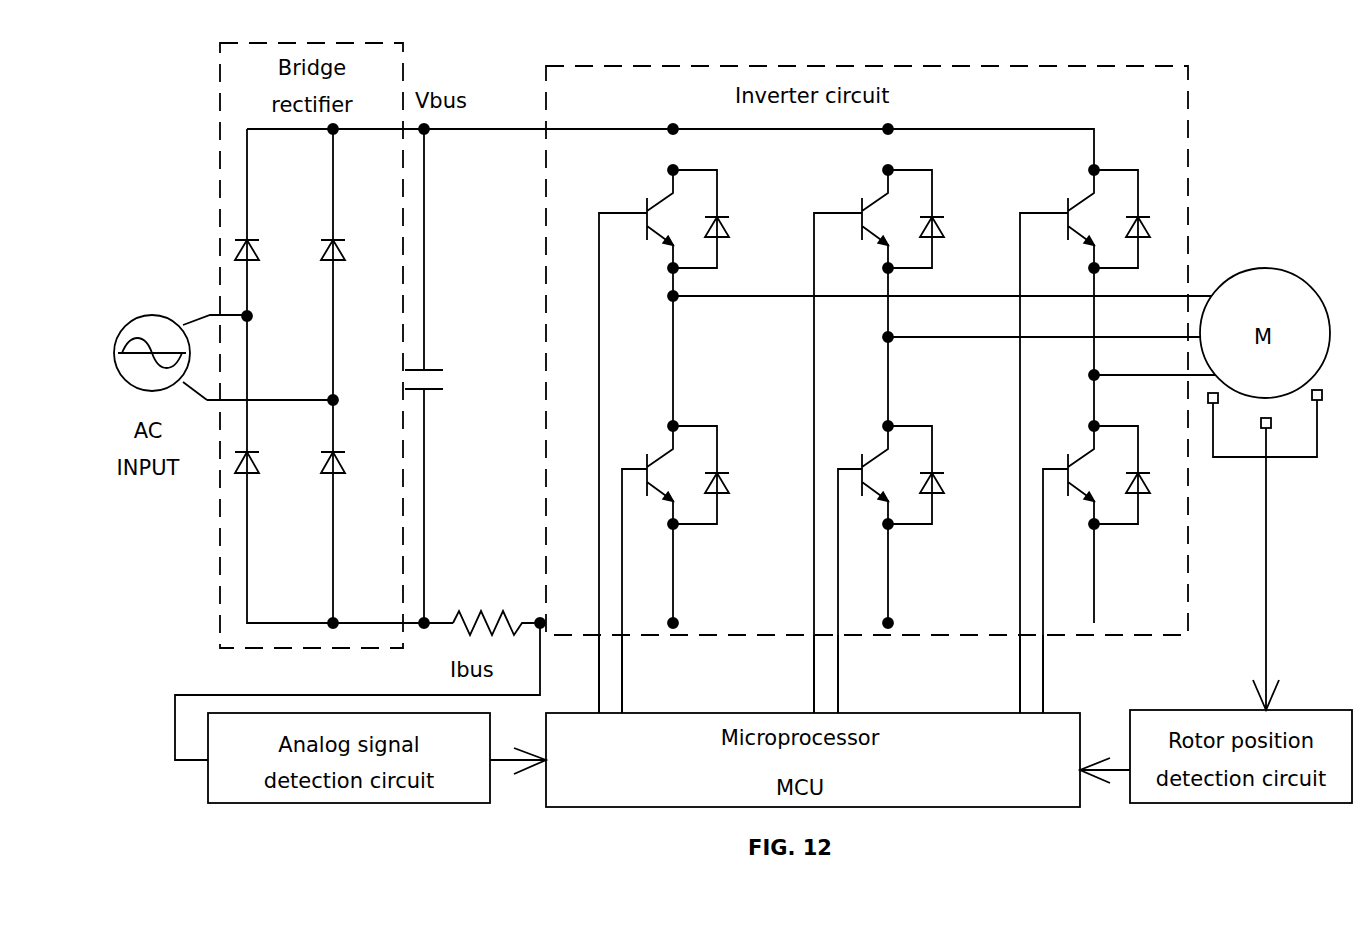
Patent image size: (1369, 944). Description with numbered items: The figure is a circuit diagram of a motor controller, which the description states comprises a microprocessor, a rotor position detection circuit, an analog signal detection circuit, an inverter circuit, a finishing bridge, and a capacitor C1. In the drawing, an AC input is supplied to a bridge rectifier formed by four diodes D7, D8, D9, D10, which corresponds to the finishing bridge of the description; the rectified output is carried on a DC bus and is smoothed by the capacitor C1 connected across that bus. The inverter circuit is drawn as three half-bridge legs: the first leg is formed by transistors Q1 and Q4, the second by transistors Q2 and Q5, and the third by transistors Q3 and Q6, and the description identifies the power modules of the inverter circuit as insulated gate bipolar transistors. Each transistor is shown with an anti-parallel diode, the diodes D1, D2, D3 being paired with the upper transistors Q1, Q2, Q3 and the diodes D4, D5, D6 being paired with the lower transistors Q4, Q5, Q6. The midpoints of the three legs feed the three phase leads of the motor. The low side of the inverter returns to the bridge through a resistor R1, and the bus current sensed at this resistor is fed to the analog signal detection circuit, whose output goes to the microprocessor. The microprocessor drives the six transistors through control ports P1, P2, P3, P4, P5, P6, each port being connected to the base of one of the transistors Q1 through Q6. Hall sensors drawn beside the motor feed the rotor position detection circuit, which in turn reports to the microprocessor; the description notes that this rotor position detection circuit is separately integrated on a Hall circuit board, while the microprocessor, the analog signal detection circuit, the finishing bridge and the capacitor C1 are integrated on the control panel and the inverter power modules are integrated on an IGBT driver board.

The freewheeling diode D1 is at (715, 219).
The freewheeling diode D2 is at (930, 219).
The freewheeling diode D3 is at (1136, 219).
The freewheeling diode D4 is at (715, 475).
The freewheeling diode D5 is at (930, 475).
The freewheeling diode D6 is at (1136, 475).
The bridge rectifier diode D7 is at (261, 271).
The bridge rectifier diode D8 is at (347, 271).
The bridge rectifier diode D9 is at (261, 482).
The bridge rectifier diode D10 is at (353, 482).
The switching transistor Q1 is at (636, 438).
The switching transistor Q2 is at (851, 438).
The switching transistor Q3 is at (1057, 438).
The switching transistor Q4 is at (647, 566).
The switching transistor Q5 is at (862, 566).
The switching transistor Q6 is at (1068, 566).
The capacitor C1 is at (431, 376).
The current sensing resistor R1 is at (496, 609).
The MCU drive output port P1 is at (582, 674).
The MCU drive output port P2 is at (640, 674).
The MCU drive output port P3 is at (792, 674).
The MCU drive output port P4 is at (856, 674).
The MCU drive output port P5 is at (997, 674).
The MCU drive output port P6 is at (1063, 674).